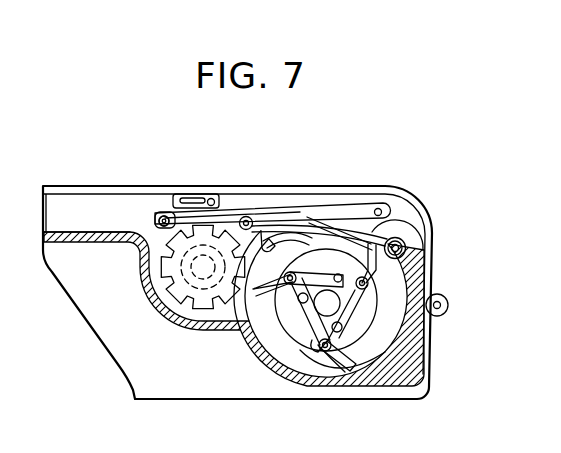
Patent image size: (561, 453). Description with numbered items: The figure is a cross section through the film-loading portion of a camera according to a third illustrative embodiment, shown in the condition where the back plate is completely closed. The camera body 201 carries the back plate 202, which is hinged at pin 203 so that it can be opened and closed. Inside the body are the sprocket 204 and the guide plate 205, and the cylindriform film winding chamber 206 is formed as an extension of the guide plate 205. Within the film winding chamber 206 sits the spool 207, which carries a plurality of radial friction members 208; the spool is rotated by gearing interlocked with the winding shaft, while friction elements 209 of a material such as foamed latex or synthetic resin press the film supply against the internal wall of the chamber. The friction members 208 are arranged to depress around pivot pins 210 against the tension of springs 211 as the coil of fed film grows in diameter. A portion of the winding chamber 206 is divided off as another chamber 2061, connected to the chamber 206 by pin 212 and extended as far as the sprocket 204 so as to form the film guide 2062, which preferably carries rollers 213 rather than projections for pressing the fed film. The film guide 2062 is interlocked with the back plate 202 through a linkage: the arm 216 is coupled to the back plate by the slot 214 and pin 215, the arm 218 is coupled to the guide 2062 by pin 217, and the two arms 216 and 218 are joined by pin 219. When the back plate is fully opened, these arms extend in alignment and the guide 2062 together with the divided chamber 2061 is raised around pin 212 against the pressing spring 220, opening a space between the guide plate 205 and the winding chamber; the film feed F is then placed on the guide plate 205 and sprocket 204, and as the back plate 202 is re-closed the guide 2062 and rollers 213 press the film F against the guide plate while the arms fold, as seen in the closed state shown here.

The camera body 201 is at (160, 388).
The back plate 202 is at (82, 187).
The pin 203 is at (448, 305).
The sprocket 204 is at (203, 300).
The guide plate 205 is at (152, 274).
The film winding chamber 206 is at (262, 360).
The divided chamber 2061 is at (418, 223).
The film guide 2062 is at (164, 214).
The spool 207 is at (362, 320).
The radial friction members 208 is at (385, 352).
The friction elements 209 is at (342, 377).
The pivot pins 210 is at (336, 345).
The springs 211 is at (322, 320).
The pin 212 is at (408, 247).
The rollers 213 is at (158, 217).
The slot 214 is at (190, 199).
The pin 215 is at (214, 198).
The arm 216 is at (278, 205).
The pin 217 is at (149, 251).
The arm 218 is at (330, 215).
The pin 219 is at (381, 207).
The pressing spring 220 is at (345, 222).
The film feed F is at (269, 253).